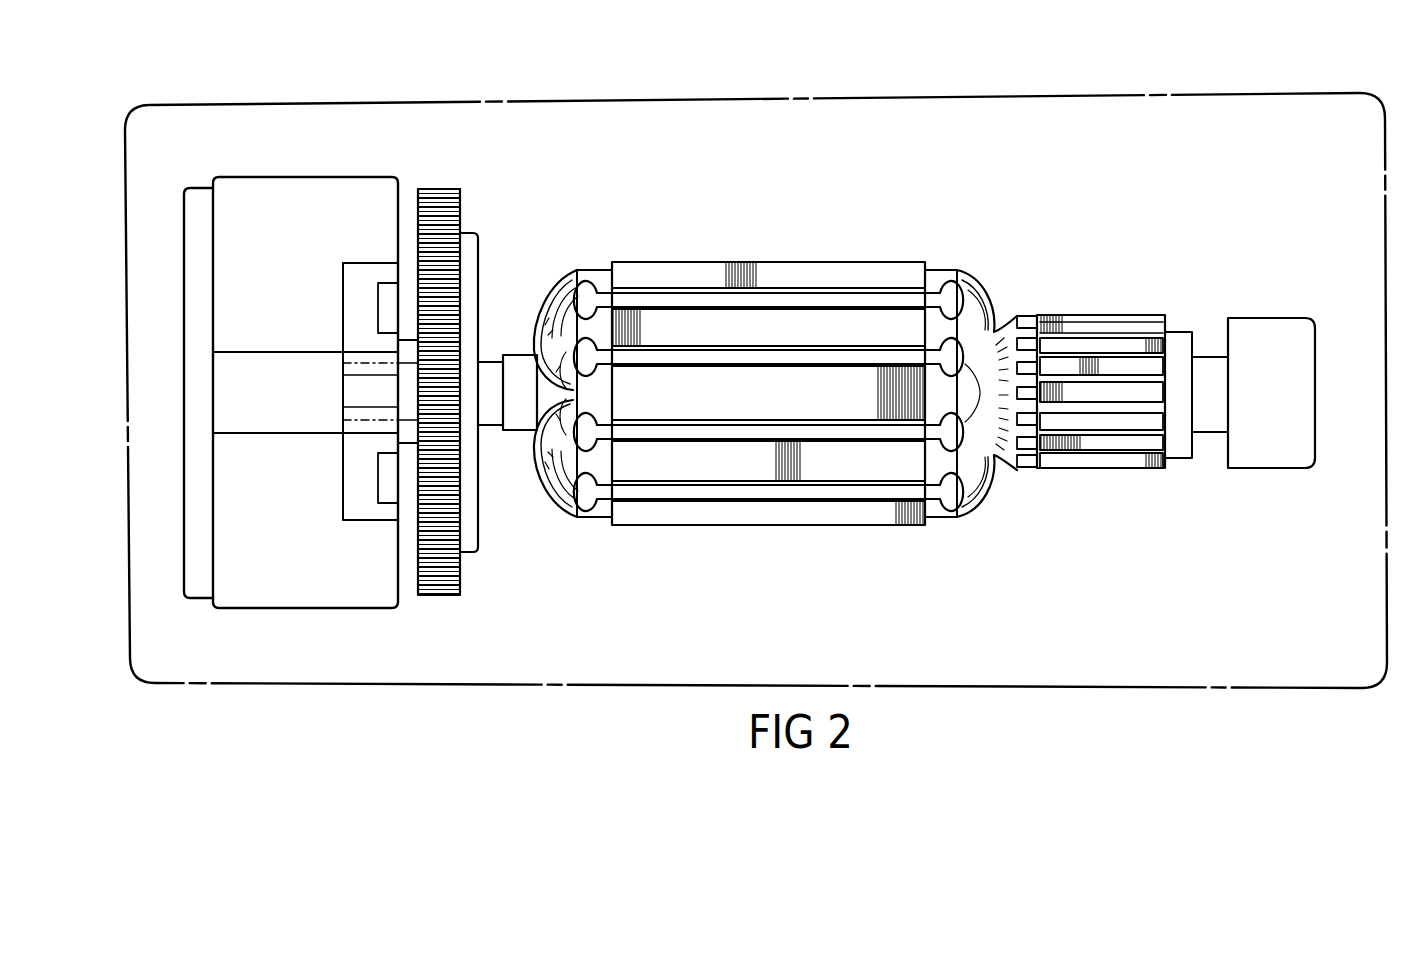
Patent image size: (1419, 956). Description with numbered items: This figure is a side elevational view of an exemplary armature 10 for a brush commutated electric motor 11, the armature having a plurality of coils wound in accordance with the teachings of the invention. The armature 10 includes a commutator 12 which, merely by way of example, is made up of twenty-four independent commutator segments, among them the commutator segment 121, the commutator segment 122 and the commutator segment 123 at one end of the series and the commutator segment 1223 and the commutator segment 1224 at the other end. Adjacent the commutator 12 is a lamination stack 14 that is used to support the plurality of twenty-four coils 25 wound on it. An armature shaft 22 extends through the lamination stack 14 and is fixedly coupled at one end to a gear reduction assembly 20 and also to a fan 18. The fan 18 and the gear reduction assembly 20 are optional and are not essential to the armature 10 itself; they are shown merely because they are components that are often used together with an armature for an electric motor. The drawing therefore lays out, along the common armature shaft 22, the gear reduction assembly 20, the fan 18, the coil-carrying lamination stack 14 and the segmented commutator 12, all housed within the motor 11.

The armature 10 is at (645, 256).
The brush commutated electric motor 11 is at (940, 100).
The commutator 12 is at (1072, 317).
The lamination stack 14 is at (862, 323).
The fan 18 is at (437, 189).
The gear reduction assembly 20 is at (337, 609).
The armature shaft 22 is at (490, 367).
The coils 25 is at (568, 506).
The commutator segment 121 is at (1150, 396).
The commutator segment 122 is at (1135, 367).
The commutator segment 123 is at (1112, 345).
The commutator segment 1223 is at (1088, 442).
The commutator segment 1224 is at (1103, 420).